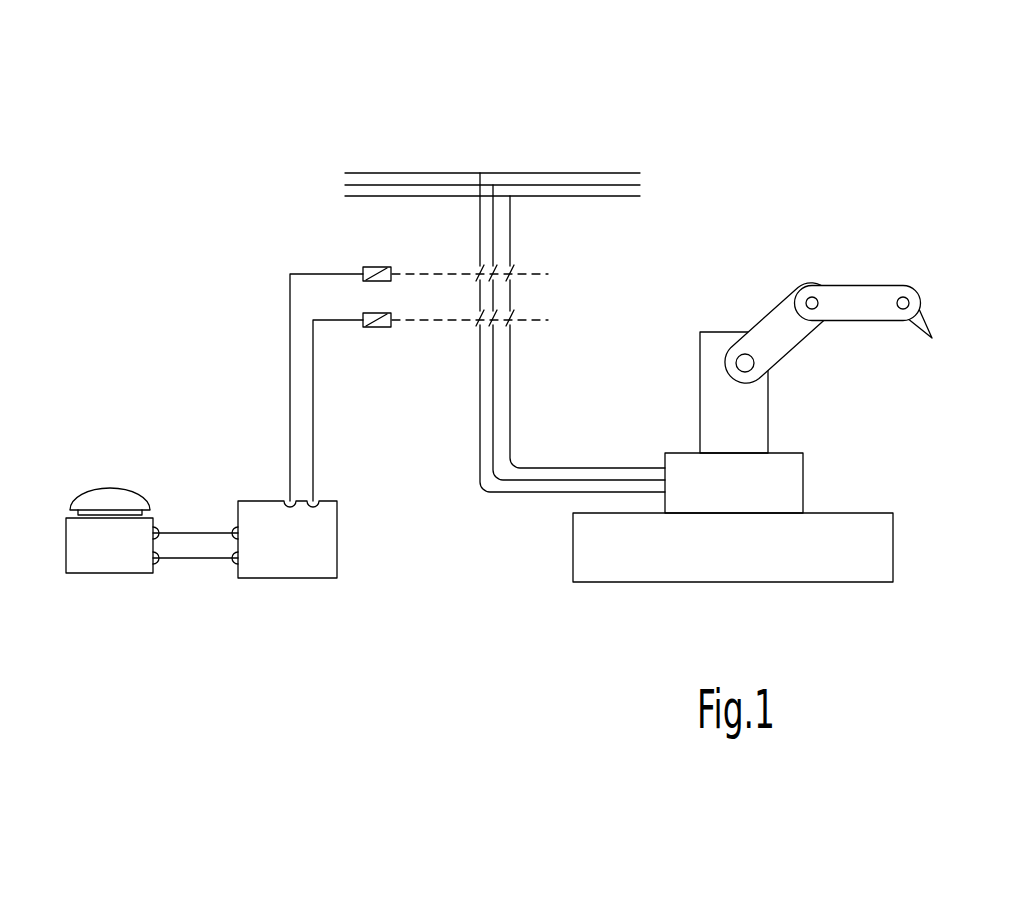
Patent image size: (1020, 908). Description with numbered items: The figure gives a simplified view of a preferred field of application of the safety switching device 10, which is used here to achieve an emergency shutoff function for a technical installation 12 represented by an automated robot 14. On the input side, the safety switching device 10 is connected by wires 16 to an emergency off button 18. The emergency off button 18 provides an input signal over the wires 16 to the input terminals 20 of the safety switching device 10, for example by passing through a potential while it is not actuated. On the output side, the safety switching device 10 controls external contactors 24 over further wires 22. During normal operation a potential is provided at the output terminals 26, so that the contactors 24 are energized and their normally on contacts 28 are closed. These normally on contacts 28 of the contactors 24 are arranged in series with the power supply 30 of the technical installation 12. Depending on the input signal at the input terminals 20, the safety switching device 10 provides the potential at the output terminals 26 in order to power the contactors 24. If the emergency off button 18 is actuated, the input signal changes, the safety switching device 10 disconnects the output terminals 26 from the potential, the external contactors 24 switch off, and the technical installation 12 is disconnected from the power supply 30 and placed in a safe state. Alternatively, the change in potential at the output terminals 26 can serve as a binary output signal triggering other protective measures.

The safety switching device 10 is at (298, 610).
The technical installation 12 is at (722, 225).
The automated robot 14 is at (773, 323).
The wires 16 is at (195, 548).
The emergency off button 18 is at (103, 548).
The input terminals 20 is at (235, 530).
The further wires 22 is at (290, 392).
The external contactors 24 is at (375, 267).
The output terminals 26 is at (284, 498).
The normally on contacts 28 is at (507, 285).
The power supply 30 is at (493, 203).